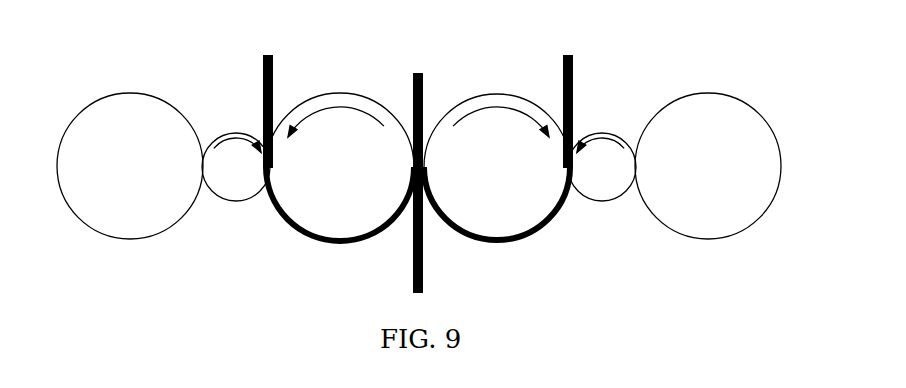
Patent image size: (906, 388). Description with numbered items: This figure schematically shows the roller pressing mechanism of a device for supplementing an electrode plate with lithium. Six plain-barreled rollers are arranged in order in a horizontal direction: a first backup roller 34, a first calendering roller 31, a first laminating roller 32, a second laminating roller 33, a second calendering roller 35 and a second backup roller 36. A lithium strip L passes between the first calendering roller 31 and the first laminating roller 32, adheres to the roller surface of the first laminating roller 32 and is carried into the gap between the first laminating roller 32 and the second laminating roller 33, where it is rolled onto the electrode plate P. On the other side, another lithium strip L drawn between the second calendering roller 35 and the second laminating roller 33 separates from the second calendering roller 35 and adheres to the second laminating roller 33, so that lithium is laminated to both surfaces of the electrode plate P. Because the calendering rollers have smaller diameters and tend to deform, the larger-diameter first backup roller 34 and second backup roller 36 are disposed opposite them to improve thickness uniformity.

The first calendering roller 31 is at (230, 188).
The first laminating roller 32 is at (370, 105).
The second laminating roller 33 is at (470, 103).
The first backup roller 34 is at (132, 112).
The second calendering roller 35 is at (608, 189).
The second backup roller 36 is at (703, 112).
The lithium strip L is at (275, 90).
The electrode plate P is at (423, 268).